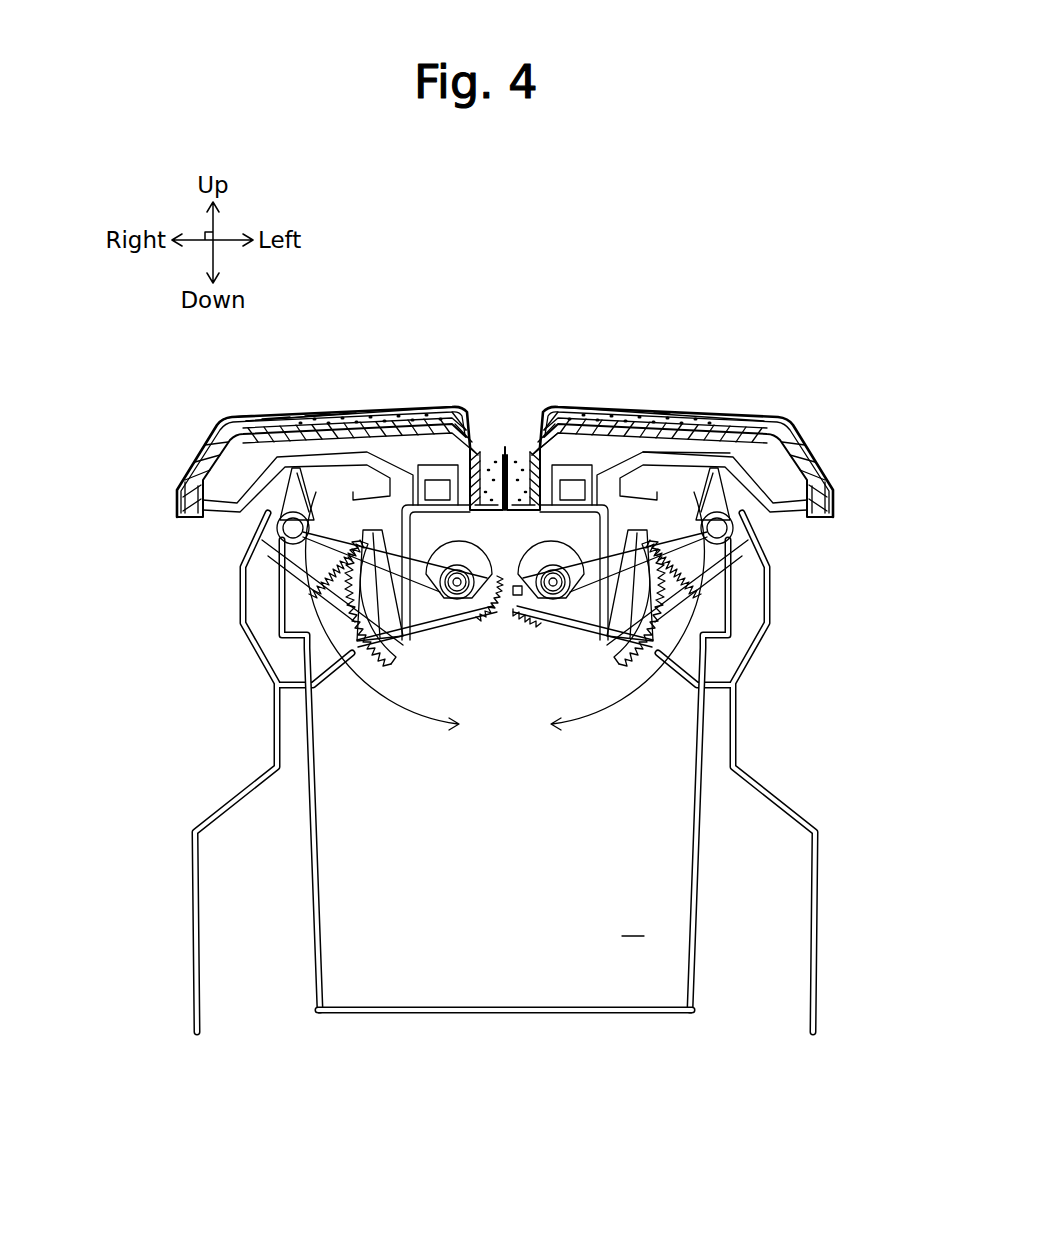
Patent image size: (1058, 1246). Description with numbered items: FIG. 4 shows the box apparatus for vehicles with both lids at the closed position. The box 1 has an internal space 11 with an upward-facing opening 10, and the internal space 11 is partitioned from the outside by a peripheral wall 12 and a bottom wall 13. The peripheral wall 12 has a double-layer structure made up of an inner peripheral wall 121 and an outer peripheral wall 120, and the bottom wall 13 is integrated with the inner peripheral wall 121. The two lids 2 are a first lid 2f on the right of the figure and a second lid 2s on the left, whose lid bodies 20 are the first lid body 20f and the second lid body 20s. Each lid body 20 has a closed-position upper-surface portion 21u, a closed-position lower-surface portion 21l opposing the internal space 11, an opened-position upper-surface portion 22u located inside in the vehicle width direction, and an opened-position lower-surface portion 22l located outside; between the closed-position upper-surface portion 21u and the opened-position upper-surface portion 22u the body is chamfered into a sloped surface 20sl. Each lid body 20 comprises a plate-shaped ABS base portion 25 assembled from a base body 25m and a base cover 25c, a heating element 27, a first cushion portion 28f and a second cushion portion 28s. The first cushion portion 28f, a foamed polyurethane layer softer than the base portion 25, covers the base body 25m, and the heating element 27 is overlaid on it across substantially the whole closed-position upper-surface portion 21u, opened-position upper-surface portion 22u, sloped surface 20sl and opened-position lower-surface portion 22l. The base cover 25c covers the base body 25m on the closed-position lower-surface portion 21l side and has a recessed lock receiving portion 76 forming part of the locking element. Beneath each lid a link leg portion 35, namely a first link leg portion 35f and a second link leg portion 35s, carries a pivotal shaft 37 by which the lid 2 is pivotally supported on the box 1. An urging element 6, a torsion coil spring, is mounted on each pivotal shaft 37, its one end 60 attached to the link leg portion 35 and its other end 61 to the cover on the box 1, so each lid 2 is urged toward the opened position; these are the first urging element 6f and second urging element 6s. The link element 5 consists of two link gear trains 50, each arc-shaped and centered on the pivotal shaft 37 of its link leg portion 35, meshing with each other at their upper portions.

The box 1 is at (470, 790).
The lid 2 is at (494, 435).
The first lid 2f is at (162, 458).
The second lid 2s is at (826, 421).
The link element 5 is at (503, 714).
The urging element 6 is at (500, 560).
The first urging element 6f is at (421, 573).
The second urging element 6s is at (552, 573).
The opening 10 is at (372, 416).
The internal space 11 is at (633, 925).
The peripheral wall 12 is at (470, 772).
The bottom wall 13 is at (492, 1015).
The lid body 20 is at (508, 403).
The first lid body 20f is at (377, 490).
The second lid body 20s is at (711, 422).
The sloped surface 20sl is at (528, 425).
The closed-position upper-surface portion 21u is at (414, 425).
The closed-position lower-surface portion 21l is at (669, 452).
The opened-position upper-surface portion 22u is at (503, 445).
The opened-position lower-surface portion 22l is at (180, 510).
The base portion 25 is at (345, 352).
The base body 25m is at (278, 416).
The base cover 25c is at (318, 415).
The heating element 27 is at (347, 411).
The first cushion portion 28f is at (213, 442).
The second cushion portion 28s is at (221, 418).
The link leg portion 35 is at (505, 617).
The first link leg portion 35f is at (423, 620).
The second link leg portion 35s is at (584, 620).
The pivotal shaft 37 is at (461, 598).
The link gear train 50 is at (498, 628).
The one end of the urging element 60 is at (307, 523).
The another end of the urging element 61 is at (494, 574).
The lock receiving portion 76 is at (436, 488).
The outer peripheral wall 120 is at (257, 655).
The inner peripheral wall 121 is at (318, 858).